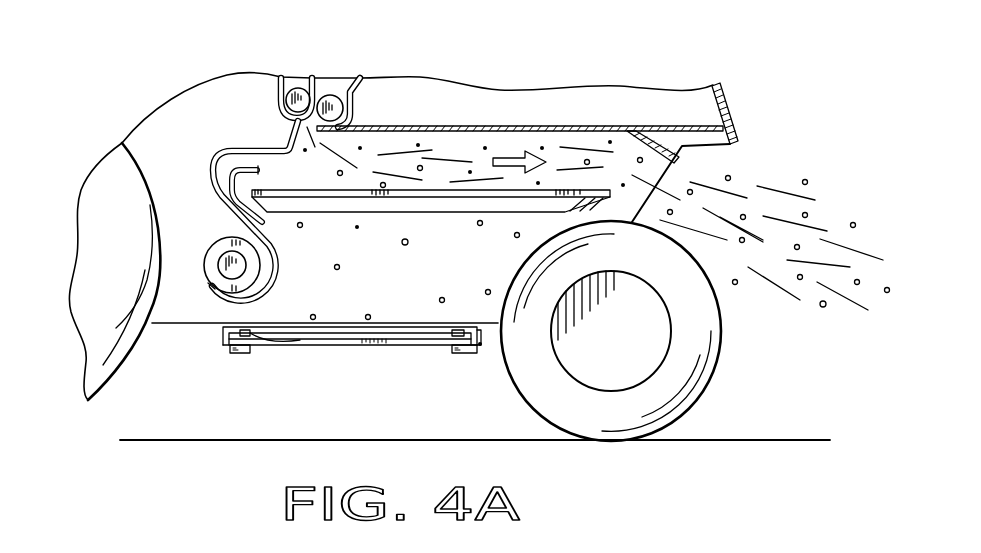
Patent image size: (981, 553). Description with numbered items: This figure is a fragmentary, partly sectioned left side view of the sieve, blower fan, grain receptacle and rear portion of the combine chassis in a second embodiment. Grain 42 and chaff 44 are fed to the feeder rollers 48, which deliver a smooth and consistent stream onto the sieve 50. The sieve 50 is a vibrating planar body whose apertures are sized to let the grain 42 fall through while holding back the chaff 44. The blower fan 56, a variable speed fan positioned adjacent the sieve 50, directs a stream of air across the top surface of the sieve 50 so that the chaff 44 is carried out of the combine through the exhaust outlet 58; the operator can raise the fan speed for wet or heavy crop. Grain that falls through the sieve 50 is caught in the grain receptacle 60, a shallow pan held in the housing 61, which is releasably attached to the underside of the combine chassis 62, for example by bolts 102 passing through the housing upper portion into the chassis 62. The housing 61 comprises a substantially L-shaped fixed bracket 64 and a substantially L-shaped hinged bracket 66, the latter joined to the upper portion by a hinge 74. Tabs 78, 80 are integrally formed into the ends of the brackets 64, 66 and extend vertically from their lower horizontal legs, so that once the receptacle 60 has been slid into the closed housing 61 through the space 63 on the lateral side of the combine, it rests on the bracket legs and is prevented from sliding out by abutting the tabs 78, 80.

The grain 42 is at (408, 242).
The chaff 44 is at (818, 231).
The feeder rollers 48 is at (328, 100).
The sieve 50 is at (283, 205).
The blower fan 56 is at (229, 260).
The exhaust outlet 58 is at (677, 177).
The grain receptacle 60 is at (347, 343).
The grain receptacle housing 61 is at (293, 324).
The combine chassis 62 is at (165, 324).
The space 63 is at (208, 332).
The fixed bracket 64 is at (248, 355).
The hinged bracket 66 is at (451, 355).
The hinge 74 is at (482, 347).
The tab 78 is at (238, 353).
The tab 80 is at (468, 354).
The bolts 102 is at (262, 340).